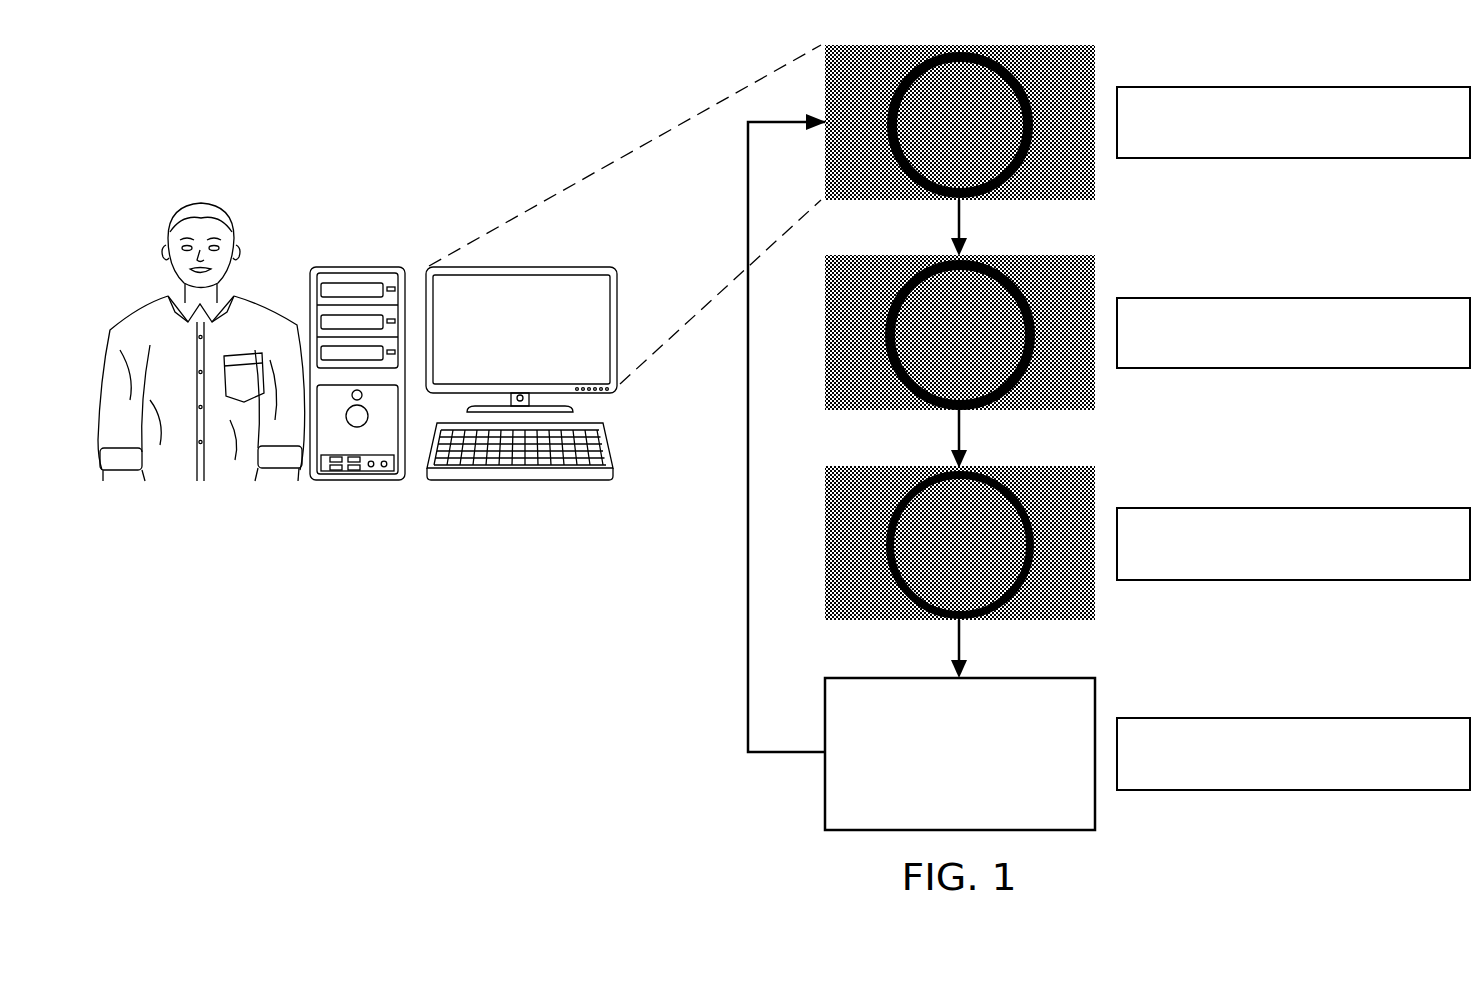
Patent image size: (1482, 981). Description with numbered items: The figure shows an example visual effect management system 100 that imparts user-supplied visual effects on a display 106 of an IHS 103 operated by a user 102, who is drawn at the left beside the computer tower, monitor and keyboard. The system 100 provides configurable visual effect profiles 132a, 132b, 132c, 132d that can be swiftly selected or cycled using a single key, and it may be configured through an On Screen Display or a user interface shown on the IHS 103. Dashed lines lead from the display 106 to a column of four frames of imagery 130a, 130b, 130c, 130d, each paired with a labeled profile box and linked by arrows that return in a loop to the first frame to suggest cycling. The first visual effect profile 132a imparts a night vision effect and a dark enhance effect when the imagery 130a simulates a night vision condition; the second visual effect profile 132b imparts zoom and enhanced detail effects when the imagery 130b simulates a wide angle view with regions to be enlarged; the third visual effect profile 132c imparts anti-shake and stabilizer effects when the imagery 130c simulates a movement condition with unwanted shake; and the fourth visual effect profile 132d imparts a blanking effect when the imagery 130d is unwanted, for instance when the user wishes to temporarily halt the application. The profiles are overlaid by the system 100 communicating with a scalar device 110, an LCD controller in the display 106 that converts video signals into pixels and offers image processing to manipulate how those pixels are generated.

The visual effect management system 100 is at (282, 64).
The user 102 is at (198, 212).
The IHS 103 is at (551, 267).
The display 106 is at (625, 298).
The scalar device 110 is at (499, 340).
The imagery 130a is at (1097, 68).
The imagery 130b is at (1097, 278).
The imagery 130c is at (1097, 597).
The imagery 130d is at (1097, 808).
The first visual effect profile 132a is at (1292, 86).
The second visual effect profile 132b is at (1292, 297).
The third visual effect profile 132c is at (1292, 581).
The fourth visual effect profile 132d is at (1292, 791).